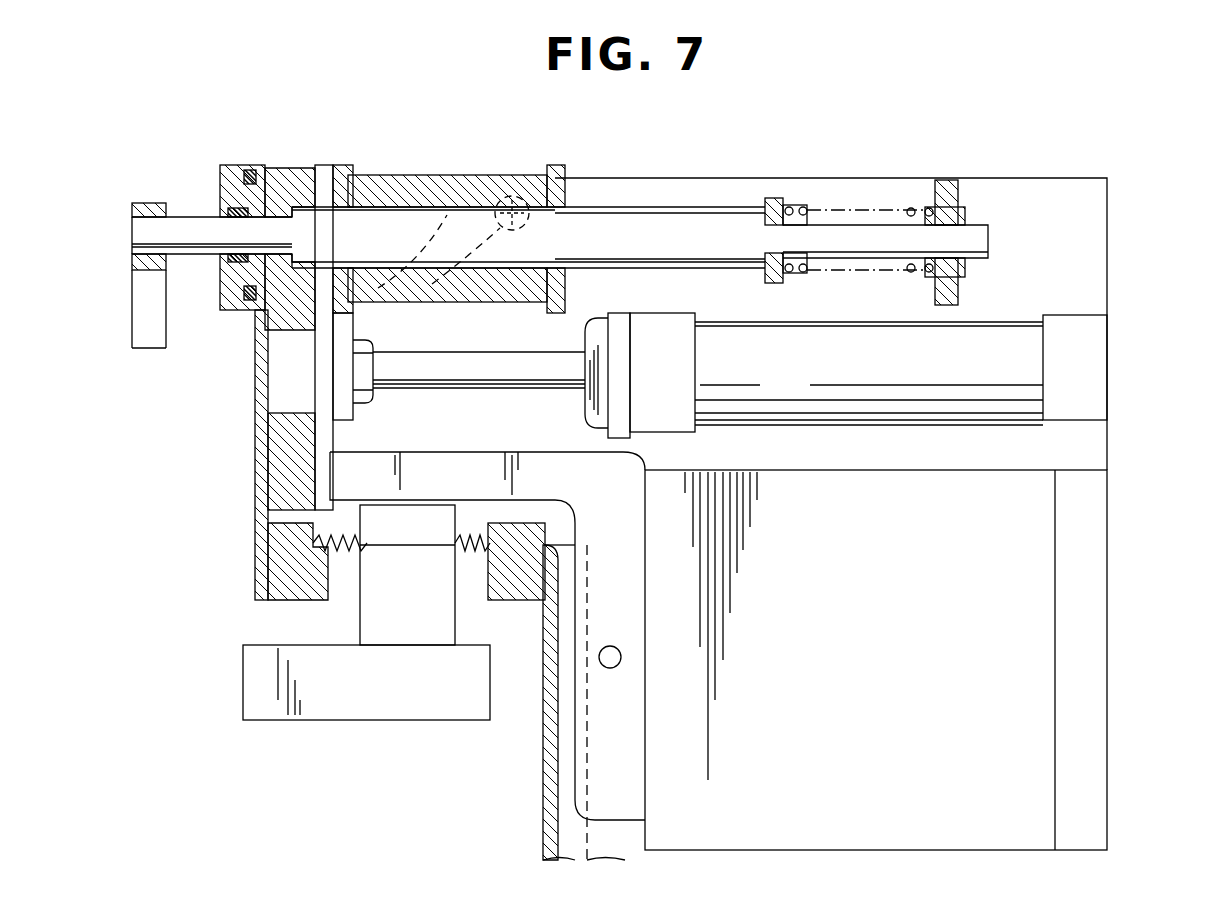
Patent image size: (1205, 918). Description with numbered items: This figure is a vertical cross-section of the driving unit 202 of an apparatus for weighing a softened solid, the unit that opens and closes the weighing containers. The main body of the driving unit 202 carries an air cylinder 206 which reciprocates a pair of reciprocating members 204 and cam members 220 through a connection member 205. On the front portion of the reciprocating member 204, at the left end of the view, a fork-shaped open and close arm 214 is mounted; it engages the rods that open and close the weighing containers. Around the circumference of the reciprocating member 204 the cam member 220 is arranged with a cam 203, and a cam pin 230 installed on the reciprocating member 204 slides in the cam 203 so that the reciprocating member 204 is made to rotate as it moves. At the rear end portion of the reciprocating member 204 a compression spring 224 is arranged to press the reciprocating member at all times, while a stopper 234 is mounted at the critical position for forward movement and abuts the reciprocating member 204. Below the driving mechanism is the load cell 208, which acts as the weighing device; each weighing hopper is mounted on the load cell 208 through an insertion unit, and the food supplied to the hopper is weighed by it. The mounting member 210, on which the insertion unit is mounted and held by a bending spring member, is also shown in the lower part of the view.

The driving unit 202 is at (1110, 283).
The cam 203 is at (455, 215).
The reciprocating member 204 is at (690, 212).
The connection member 205 is at (355, 312).
The air cylinder 206 is at (1018, 330).
The load cell 208 is at (851, 628).
The mounting member 210 is at (370, 720).
The open and close arm 214 is at (132, 258).
The cam member 220 is at (400, 200).
The compression spring 224 is at (800, 204).
The cam pin 230 is at (510, 200).
The stopper 234 is at (288, 195).